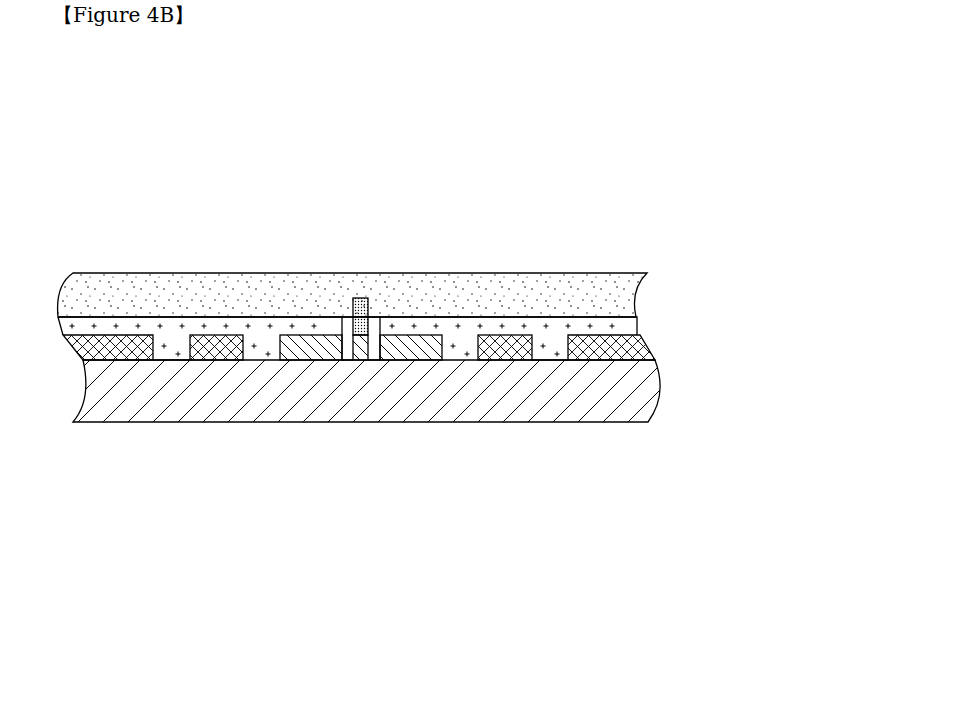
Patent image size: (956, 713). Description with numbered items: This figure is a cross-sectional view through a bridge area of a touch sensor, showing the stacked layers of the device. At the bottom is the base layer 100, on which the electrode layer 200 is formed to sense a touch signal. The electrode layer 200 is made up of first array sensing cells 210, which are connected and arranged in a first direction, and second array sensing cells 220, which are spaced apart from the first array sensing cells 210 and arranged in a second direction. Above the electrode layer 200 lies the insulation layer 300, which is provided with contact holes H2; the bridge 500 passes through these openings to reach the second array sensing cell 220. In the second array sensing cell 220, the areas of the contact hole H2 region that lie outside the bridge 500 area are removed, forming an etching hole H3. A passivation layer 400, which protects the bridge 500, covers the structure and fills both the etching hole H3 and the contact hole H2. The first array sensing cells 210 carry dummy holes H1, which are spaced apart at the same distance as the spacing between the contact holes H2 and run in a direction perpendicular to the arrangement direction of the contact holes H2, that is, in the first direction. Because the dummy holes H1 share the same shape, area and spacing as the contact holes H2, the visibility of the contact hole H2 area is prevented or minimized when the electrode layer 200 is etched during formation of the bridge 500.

The base layer 100 is at (643, 393).
The electrode layer 200 is at (267, 133).
The first array sensing cells 210 is at (214, 333).
The second array sensing cells 220 is at (312, 333).
The insulation layer 300 is at (622, 327).
The passivation layer 400 is at (620, 293).
The bridge 500 is at (360, 298).
The dummy holes H1 is at (188, 345).
The contact holes H2 is at (348, 345).
The etching hole H3 is at (348, 353).